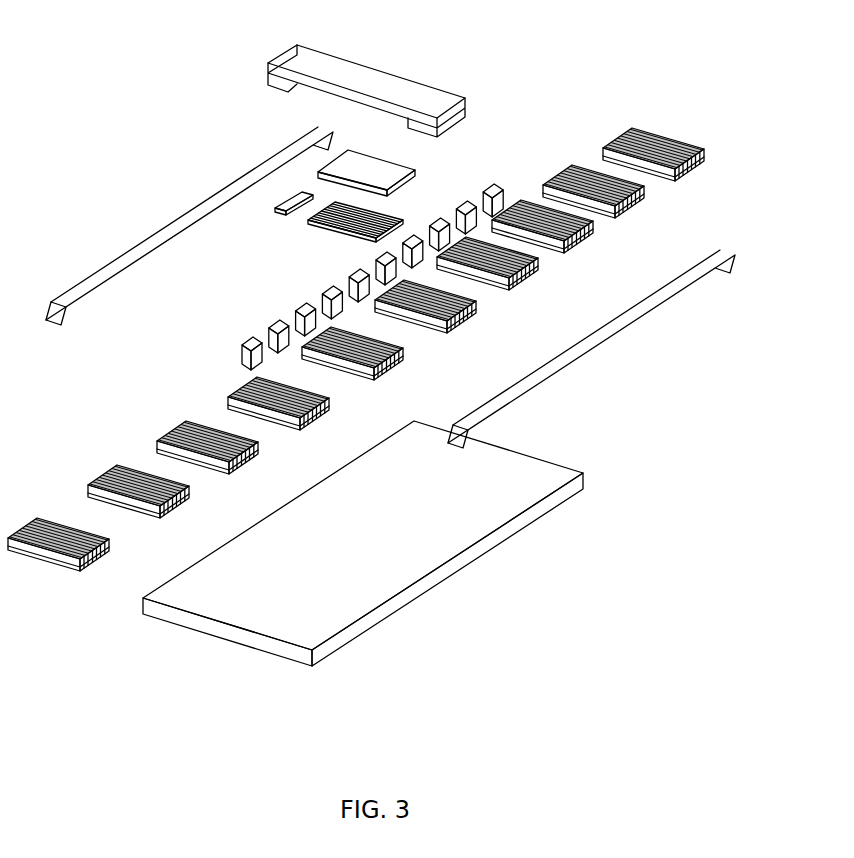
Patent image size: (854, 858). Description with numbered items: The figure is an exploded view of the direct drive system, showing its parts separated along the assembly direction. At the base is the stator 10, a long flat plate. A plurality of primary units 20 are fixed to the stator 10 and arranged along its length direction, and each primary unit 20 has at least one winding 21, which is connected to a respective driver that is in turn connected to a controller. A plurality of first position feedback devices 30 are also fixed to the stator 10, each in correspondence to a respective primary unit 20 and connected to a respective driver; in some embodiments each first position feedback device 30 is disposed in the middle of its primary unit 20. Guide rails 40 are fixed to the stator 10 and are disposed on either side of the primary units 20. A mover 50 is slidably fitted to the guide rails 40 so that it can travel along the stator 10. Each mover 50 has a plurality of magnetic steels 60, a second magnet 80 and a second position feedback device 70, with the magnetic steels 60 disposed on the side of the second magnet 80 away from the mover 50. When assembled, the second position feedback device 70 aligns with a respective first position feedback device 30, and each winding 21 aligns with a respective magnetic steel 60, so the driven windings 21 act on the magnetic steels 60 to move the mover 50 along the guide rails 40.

The stator 10 is at (290, 628).
The primary unit 20 is at (78, 572).
The winding 21 is at (95, 483).
The first position feedback device 30 is at (243, 350).
The guide rail 40 is at (113, 290).
The mover 50 is at (420, 82).
The magnetic steel 60 is at (333, 235).
The second position feedback device 70 is at (278, 209).
The second magnet 80 is at (405, 167).